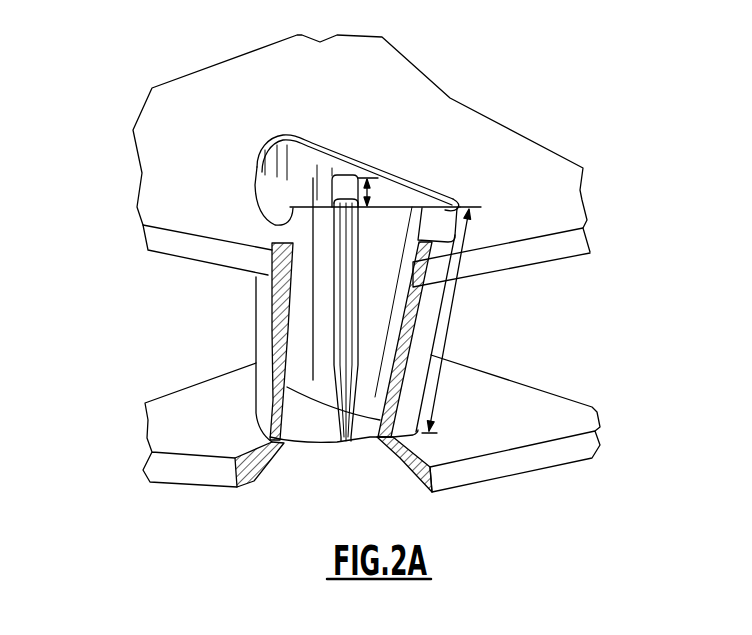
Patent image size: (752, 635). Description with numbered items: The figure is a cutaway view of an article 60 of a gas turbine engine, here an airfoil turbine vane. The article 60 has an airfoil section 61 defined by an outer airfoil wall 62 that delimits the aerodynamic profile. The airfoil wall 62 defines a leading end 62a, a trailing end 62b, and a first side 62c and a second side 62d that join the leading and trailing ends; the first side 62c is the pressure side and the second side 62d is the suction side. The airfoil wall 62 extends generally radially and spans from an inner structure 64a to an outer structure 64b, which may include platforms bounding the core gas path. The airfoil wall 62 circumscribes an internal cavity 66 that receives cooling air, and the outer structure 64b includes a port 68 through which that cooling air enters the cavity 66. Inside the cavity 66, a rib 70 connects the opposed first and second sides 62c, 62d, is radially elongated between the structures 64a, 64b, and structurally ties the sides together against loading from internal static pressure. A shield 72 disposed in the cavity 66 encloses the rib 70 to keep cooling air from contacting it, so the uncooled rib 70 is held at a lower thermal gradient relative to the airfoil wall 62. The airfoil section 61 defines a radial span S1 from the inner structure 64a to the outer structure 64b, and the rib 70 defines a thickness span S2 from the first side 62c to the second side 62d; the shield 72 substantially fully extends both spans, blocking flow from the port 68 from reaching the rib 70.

The article 60 is at (338, 272).
The airfoil section 61 is at (252, 342).
The airfoil wall 62 is at (359, 269).
The leading end 62a is at (256, 312).
The trailing end 62b is at (440, 317).
The first side 62c is at (333, 168).
The second side 62d is at (256, 200).
The inner structure 64a is at (552, 453).
The outer structure 64b is at (542, 166).
The internal cavity 66 is at (343, 161).
The port 68 is at (450, 185).
The rib 70 is at (347, 232).
The shield 72 is at (348, 185).
The radial span S1 is at (437, 403).
The thickness span S2 is at (370, 192).